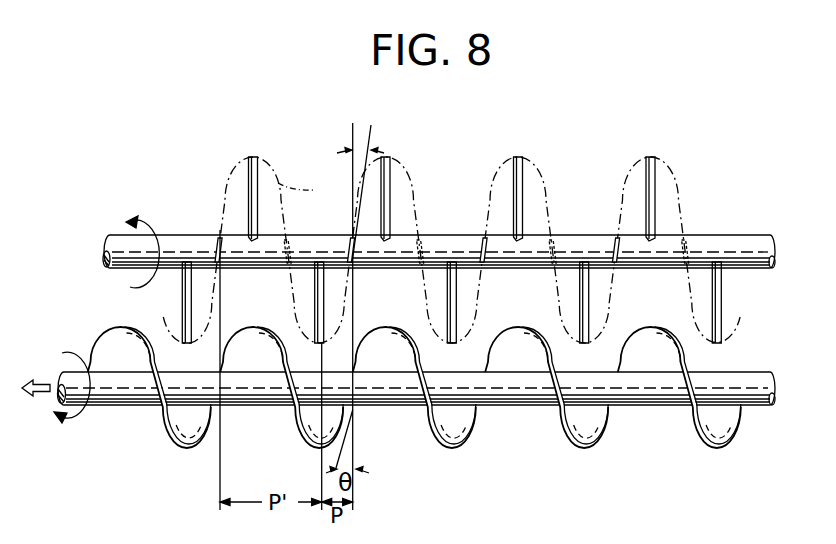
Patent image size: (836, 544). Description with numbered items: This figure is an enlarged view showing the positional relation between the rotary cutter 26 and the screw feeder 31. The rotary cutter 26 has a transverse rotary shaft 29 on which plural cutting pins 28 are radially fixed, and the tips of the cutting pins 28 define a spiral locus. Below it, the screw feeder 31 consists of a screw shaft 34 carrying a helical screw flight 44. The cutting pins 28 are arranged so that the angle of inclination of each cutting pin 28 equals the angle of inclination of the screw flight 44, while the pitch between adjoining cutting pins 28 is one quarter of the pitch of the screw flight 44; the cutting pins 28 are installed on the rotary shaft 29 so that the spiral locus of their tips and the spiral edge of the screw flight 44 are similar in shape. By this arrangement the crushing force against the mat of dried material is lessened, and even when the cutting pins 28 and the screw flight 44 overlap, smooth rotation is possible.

The rotary cutter 26 is at (439, 307).
The cutting pins 28 is at (618, 247).
The rotary shaft 29 is at (468, 247).
The screw feeder 31 is at (398, 415).
The screw shaft 34 is at (643, 393).
The screw flight 44 is at (461, 432).